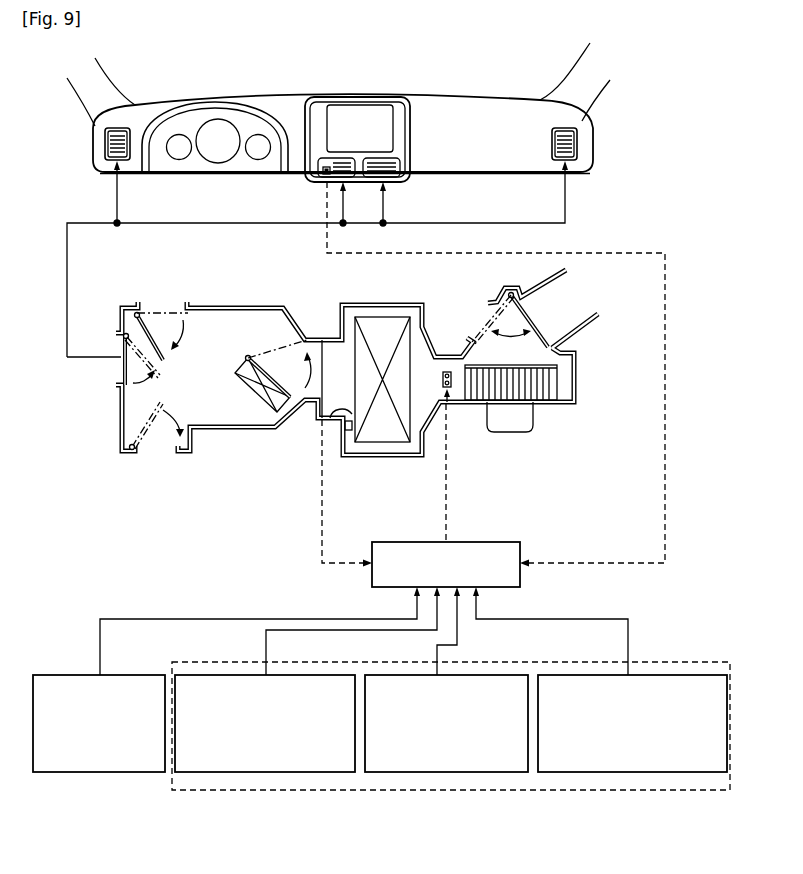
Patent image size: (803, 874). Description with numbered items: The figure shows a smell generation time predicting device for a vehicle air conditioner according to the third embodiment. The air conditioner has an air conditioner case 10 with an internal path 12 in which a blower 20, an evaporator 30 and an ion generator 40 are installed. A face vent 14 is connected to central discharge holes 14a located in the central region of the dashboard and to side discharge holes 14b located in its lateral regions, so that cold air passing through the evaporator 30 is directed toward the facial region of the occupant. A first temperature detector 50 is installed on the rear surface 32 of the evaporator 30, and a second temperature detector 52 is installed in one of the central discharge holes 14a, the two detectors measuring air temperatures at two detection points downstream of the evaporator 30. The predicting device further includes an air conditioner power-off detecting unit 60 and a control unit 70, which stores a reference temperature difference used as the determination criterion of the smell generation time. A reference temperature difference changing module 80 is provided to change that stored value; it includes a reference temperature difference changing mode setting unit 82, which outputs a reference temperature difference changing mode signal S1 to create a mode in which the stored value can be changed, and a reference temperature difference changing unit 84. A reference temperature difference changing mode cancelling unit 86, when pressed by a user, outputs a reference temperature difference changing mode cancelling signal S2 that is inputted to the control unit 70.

The air conditioner case 10 is at (357, 371).
The internal path 12 is at (332, 375).
The face vent 14 is at (117, 363).
The central discharge holes 14a is at (382, 157).
The side discharge holes 14b is at (120, 128).
The blower 20 is at (523, 427).
The evaporator 30 is at (378, 442).
The rear surface 32 is at (345, 434).
The ion generator 40 is at (447, 362).
The first temperature detector 50 is at (326, 422).
The second temperature detector 52 is at (340, 157).
The air conditioner power-off detecting unit 60 is at (100, 772).
The control unit 70 is at (522, 575).
The reference temperature difference changing module 80 is at (451, 765).
The reference temperature difference changing mode setting unit 82 is at (258, 772).
The reference temperature difference changing unit 84 is at (433, 772).
The reference temperature difference changing mode cancelling unit 86 is at (628, 772).
The reference temperature difference changing mode signal S1 is at (266, 650).
The reference temperature difference changing mode cancelling signal S2 is at (628, 632).